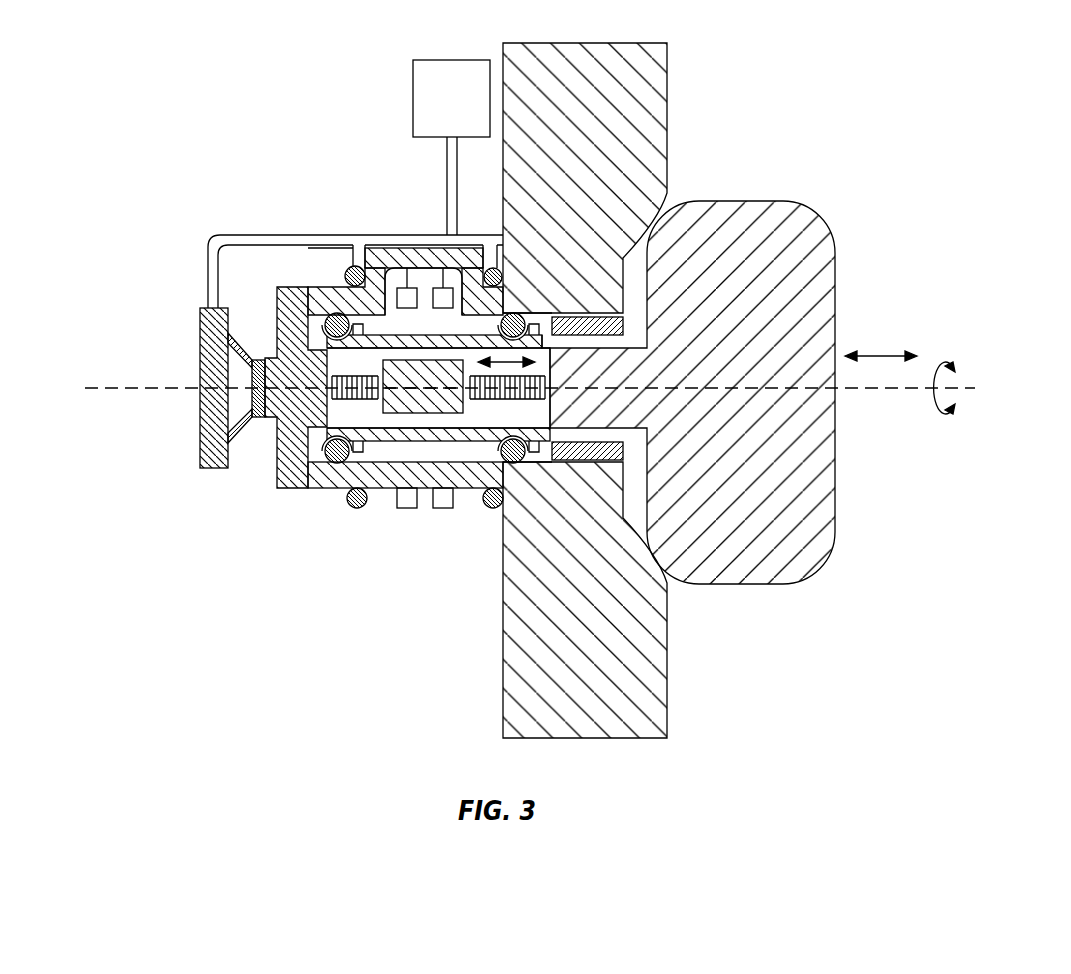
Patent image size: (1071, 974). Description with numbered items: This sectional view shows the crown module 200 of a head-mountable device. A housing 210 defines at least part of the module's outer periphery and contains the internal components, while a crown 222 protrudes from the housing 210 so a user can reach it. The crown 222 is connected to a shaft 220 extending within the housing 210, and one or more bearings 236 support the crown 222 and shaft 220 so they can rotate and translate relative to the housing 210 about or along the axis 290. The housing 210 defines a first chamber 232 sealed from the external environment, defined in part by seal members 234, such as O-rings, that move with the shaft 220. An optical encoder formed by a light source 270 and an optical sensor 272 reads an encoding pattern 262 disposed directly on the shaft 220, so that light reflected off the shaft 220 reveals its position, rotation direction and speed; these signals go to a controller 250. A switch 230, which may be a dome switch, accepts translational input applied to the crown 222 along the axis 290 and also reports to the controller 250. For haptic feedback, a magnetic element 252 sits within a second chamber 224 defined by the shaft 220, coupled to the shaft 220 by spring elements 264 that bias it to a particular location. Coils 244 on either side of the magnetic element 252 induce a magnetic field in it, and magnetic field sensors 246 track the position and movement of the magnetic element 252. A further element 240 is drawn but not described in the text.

The crown module 200 is at (153, 31).
The housing 210 is at (668, 119).
The shaft 220 is at (443, 440).
The crown 222 is at (837, 305).
The second chamber 224 is at (390, 416).
The switch 230 is at (236, 336).
The first chamber 232 is at (388, 450).
The seals 234 is at (332, 464).
The bearings 236 is at (592, 316).
The fluid conduit 240 is at (272, 233).
The coils 244 is at (350, 508).
The magnetic field sensors 246 is at (407, 509).
The controller 250 is at (451, 147).
The magnetic element 252 is at (468, 404).
The encoding pattern 262 is at (453, 316).
The spring elements 264 is at (546, 380).
The light source 270 is at (385, 268).
The optical sensor 272 is at (415, 268).
The axis 290 is at (872, 392).